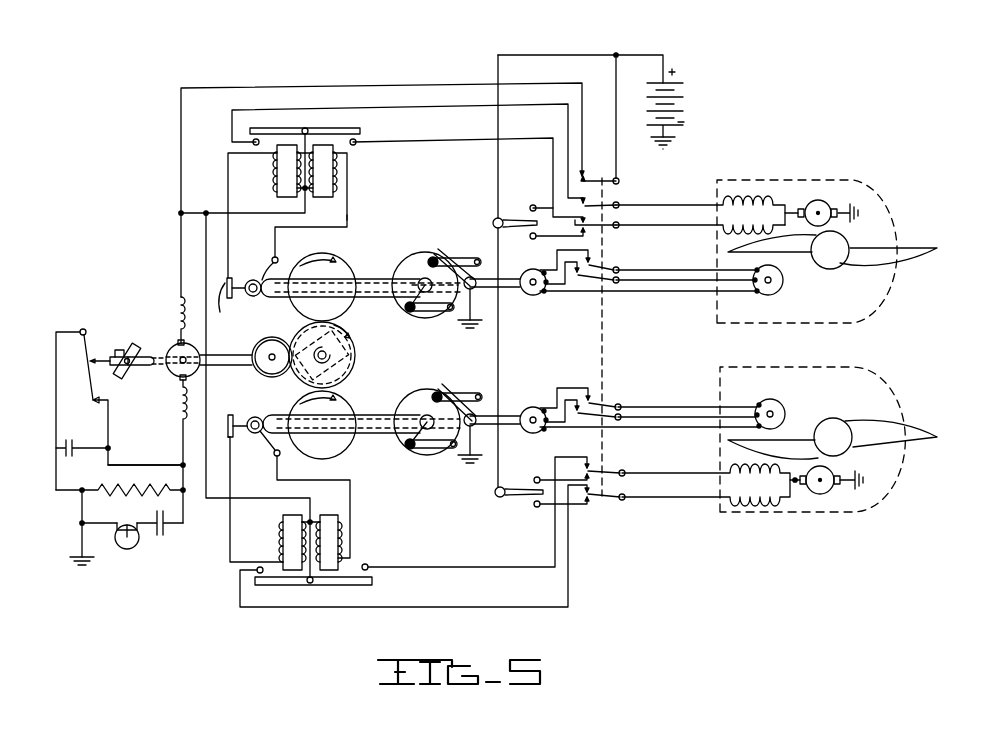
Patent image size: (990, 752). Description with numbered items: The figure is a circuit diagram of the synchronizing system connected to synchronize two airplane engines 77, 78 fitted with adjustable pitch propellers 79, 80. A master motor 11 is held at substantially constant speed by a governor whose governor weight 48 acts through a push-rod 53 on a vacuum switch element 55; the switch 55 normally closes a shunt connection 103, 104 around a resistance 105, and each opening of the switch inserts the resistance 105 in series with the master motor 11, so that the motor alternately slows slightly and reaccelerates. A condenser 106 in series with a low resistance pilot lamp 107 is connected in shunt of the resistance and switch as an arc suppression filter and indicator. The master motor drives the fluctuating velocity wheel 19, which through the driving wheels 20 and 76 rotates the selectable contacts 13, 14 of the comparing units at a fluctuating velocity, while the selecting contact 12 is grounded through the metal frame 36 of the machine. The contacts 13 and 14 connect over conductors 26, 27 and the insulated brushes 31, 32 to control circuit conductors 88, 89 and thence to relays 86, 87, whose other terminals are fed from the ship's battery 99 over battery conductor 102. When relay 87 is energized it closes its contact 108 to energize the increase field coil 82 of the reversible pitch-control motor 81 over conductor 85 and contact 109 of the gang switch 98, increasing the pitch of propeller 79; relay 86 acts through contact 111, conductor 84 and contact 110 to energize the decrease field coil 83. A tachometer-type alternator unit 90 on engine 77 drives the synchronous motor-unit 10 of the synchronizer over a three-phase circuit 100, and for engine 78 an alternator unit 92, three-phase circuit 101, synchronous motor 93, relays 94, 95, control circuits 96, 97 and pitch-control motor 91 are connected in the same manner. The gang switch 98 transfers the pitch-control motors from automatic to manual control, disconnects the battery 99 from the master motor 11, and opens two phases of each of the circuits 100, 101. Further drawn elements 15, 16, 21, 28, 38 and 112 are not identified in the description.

The synchronous motor-unit 10 is at (531, 272).
The master motor 11 is at (172, 347).
The selector contact 12 is at (436, 256).
The selectable contact 13 is at (430, 310).
The selectable contact 14 is at (462, 258).
The disc 15 is at (268, 378).
The disc 16 is at (258, 364).
The fluctuating velocity wheel 19 is at (352, 365).
The driving wheel 20 is at (318, 256).
The shaft 21 is at (508, 290).
The conductor 26 is at (393, 300).
The conductor 27 is at (390, 282).
The shaft 28 is at (358, 278).
The insulated brush 31 is at (262, 268).
The insulated brush 32 is at (228, 306).
The metal frame 36 is at (675, 141).
The shaft 38 is at (223, 354).
The governor weight 48 is at (130, 370).
The push-rod 53 is at (97, 352).
The vacuum switch element 55 is at (97, 402).
The driving wheel 76 is at (307, 443).
The airplane engine 77 is at (852, 323).
The airplane engine 78 is at (862, 520).
The adjustable pitch propeller 79 is at (831, 268).
The adjustable pitch propeller 80 is at (840, 425).
The pitch-control motor 81 is at (824, 203).
The increase field coil 82 is at (768, 196).
The decrease field coil 83 is at (768, 218).
The conductor 84 is at (440, 140).
The conductor 85 is at (440, 105).
The relay 86 is at (337, 168).
The relay 87 is at (283, 170).
The control circuit conductor 88 is at (347, 217).
The control circuit conductor 89 is at (228, 191).
The tachometer-type alternator unit 90 is at (776, 294).
The pitch-control motor 91 is at (818, 488).
The alternator unit 92 is at (776, 401).
The synchronous motor 93 is at (535, 433).
The relay 94 is at (286, 535).
The relay 95 is at (342, 541).
The control circuit 96 is at (232, 497).
The control circuit 97 is at (350, 496).
The gang switch 98 is at (604, 368).
The ship's battery 99 is at (686, 101).
The three-phase circuit 100 is at (700, 285).
The three-phase circuit 101 is at (700, 425).
The battery conductor 102 is at (262, 88).
The shunt connection 103 is at (130, 468).
The shunt connection 104 is at (56, 356).
The resistance 105 is at (108, 487).
The condenser 106 is at (172, 529).
The pilot lamp 107 is at (128, 549).
The relay contact 108 is at (252, 144).
The switch contact 109 is at (583, 205).
The switch contact 110 is at (583, 218).
The contact 111 is at (357, 141).
The shaft 112 is at (505, 417).